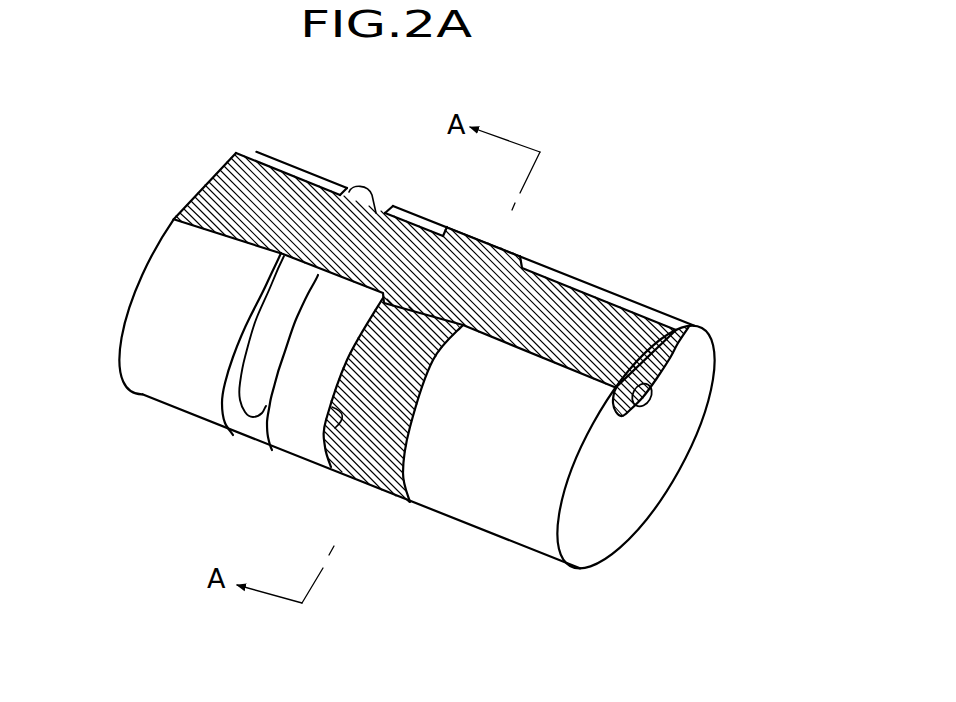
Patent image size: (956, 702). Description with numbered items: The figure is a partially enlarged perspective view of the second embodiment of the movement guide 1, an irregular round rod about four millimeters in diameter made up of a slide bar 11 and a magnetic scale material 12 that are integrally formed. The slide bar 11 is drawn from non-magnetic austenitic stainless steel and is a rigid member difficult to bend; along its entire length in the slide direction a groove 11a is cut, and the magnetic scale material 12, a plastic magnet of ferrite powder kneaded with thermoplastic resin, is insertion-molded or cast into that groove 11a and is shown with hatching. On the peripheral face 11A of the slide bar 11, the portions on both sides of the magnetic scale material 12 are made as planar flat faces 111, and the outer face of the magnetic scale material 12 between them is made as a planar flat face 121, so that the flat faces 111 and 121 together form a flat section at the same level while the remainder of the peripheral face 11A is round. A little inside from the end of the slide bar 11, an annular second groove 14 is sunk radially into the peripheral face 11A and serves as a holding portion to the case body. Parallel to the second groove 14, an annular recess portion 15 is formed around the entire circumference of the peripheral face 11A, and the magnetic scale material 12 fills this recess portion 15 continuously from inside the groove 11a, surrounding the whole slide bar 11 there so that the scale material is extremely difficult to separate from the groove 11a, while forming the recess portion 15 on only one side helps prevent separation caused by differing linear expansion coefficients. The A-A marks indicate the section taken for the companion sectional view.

The movement guide 1 is at (454, 349).
The slide bar 11 is at (695, 390).
The groove 11a is at (657, 387).
The peripheral face 11A is at (285, 418).
The magnetic scale material 12 is at (660, 363).
The second groove 14 is at (257, 380).
The recess portion 15 is at (332, 467).
The flat faces 111 is at (413, 222).
The flat face 121 is at (232, 202).